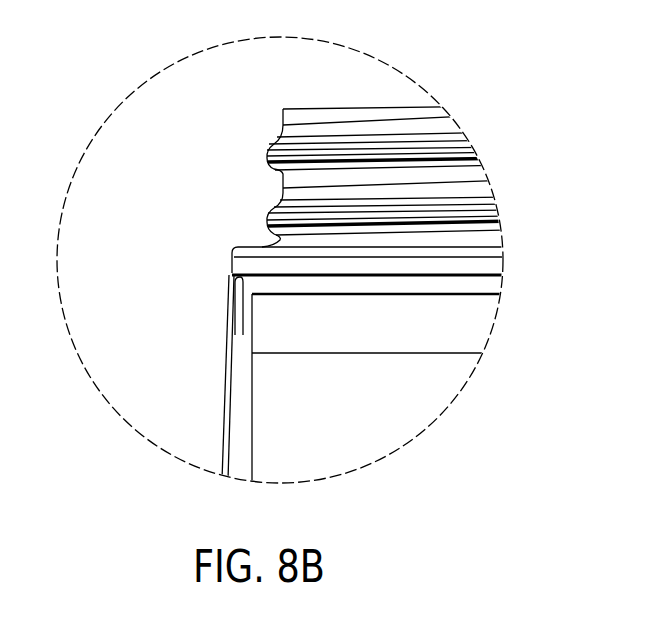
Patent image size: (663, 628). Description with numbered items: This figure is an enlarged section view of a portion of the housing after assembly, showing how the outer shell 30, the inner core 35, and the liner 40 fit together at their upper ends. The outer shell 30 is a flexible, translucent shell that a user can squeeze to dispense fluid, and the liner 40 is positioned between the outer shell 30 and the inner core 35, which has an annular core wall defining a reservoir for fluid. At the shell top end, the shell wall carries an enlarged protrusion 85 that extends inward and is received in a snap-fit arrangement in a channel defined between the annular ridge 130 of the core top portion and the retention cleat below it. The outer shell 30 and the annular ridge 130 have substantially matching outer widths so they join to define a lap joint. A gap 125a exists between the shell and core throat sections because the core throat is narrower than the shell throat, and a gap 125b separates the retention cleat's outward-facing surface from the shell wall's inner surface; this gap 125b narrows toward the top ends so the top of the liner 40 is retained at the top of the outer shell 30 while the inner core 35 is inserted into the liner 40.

The annular ridge 130 is at (233, 248).
The protrusion 85 is at (227, 277).
The outer shell 30 is at (225, 342).
The liner 40 is at (243, 415).
The inner core 35 is at (482, 330).
The gap 125a is at (318, 380).
The gap 125b is at (182, 314).